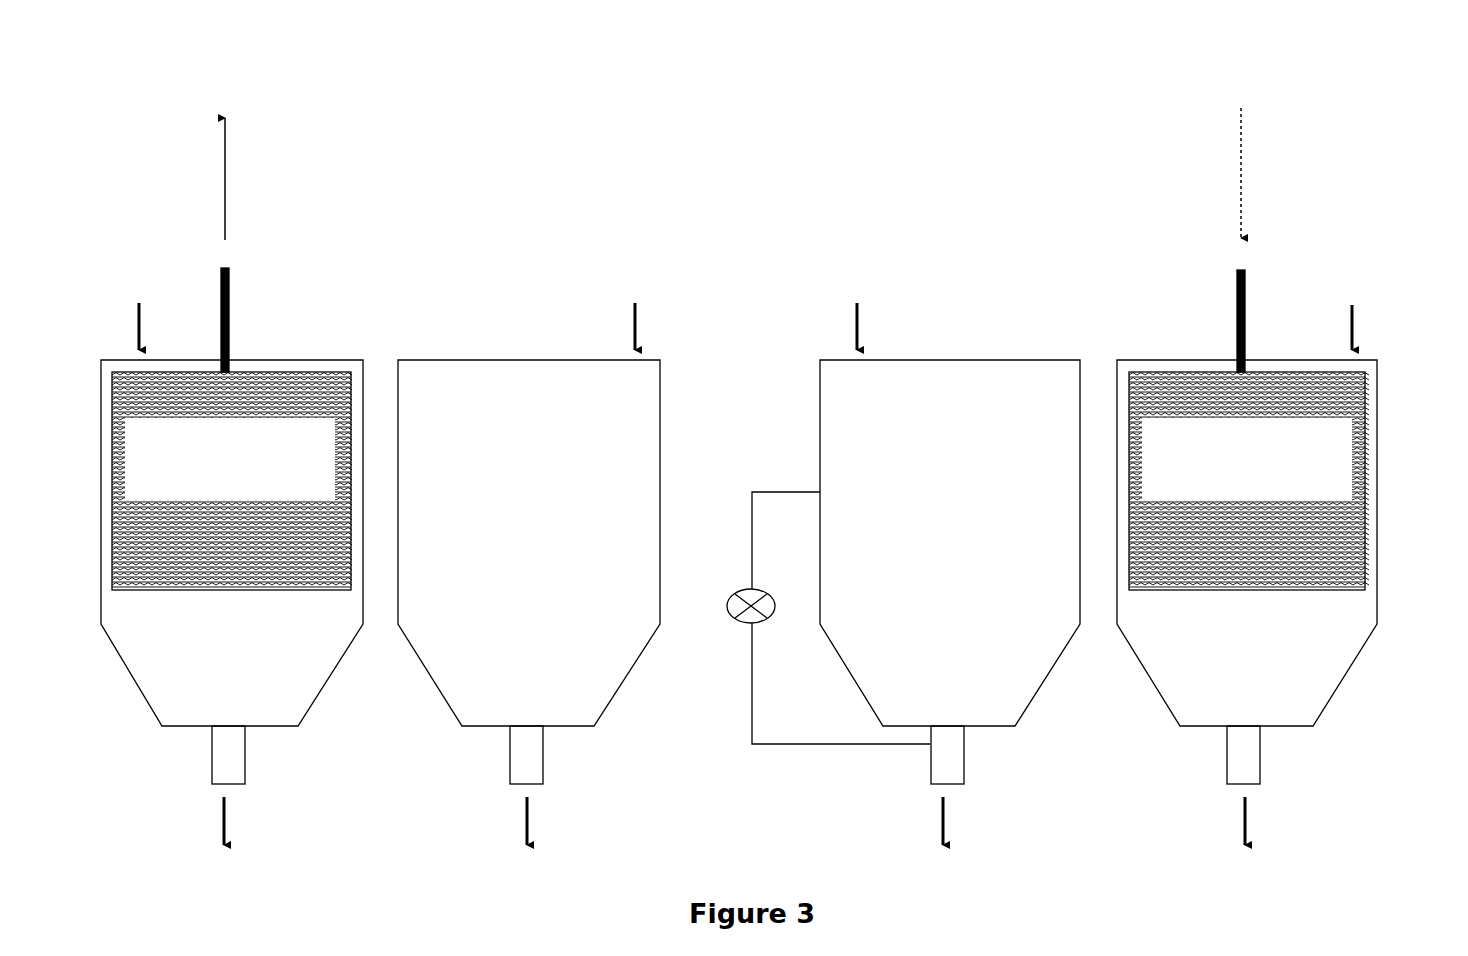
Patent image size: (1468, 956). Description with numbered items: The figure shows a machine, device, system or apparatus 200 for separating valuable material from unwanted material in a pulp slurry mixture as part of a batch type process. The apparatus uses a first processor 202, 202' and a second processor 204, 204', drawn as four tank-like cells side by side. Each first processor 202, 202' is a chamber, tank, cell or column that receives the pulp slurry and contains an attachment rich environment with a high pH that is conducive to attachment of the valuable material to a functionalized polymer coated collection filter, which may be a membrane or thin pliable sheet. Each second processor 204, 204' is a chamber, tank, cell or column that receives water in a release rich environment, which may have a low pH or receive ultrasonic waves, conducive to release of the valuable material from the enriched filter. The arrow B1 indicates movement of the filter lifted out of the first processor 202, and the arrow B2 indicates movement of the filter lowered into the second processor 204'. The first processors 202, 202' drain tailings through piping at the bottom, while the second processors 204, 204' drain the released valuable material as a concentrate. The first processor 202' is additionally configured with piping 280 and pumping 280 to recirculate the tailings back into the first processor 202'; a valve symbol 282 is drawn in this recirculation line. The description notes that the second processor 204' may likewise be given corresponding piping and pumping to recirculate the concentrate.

The machine, device, system or apparatus 200 is at (158, 94).
The first processor 202 is at (245, 479).
The first processor 202' is at (896, 490).
The second processor 204 is at (564, 543).
The second processor 204' is at (1282, 522).
The piping and pumping 280 is at (752, 541).
The valve 282 is at (737, 622).
The arrow B1 is at (222, 162).
The arrow B2 is at (1238, 162).